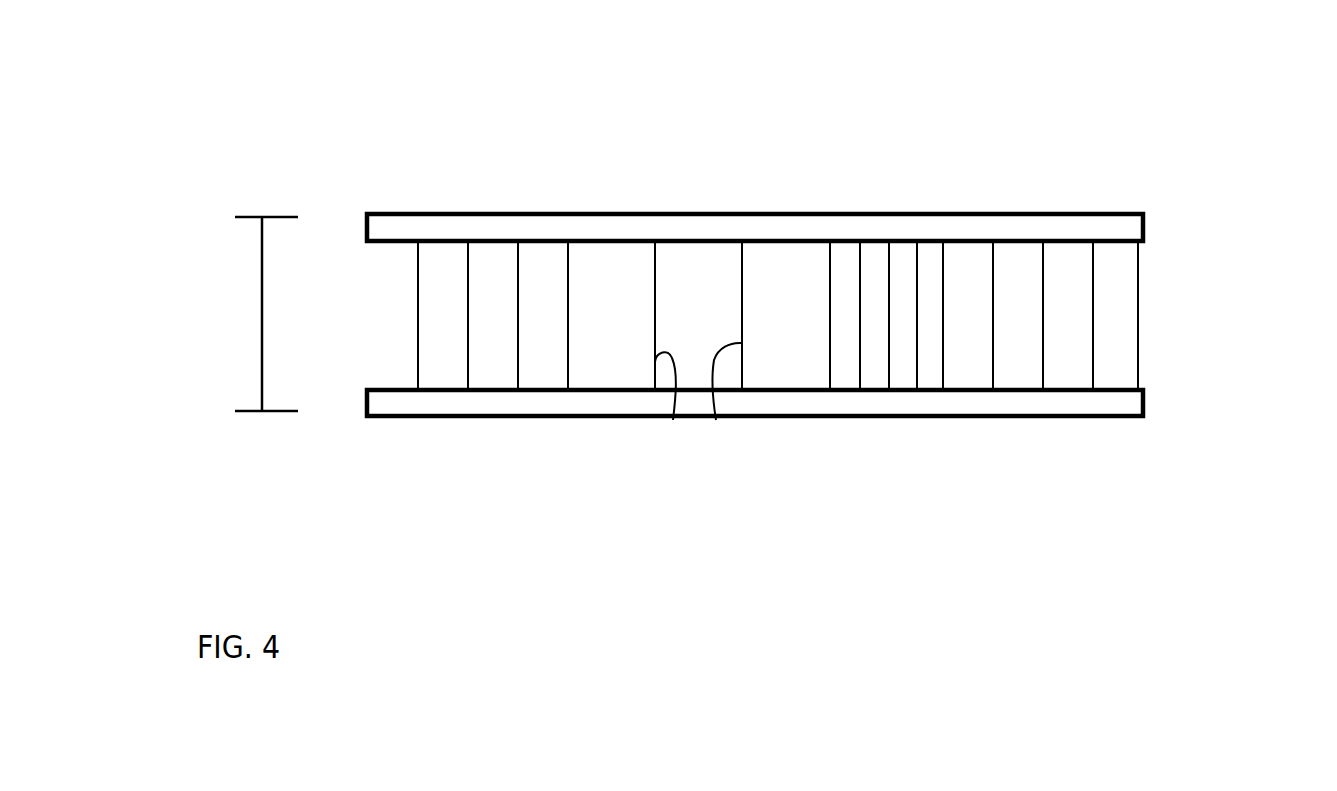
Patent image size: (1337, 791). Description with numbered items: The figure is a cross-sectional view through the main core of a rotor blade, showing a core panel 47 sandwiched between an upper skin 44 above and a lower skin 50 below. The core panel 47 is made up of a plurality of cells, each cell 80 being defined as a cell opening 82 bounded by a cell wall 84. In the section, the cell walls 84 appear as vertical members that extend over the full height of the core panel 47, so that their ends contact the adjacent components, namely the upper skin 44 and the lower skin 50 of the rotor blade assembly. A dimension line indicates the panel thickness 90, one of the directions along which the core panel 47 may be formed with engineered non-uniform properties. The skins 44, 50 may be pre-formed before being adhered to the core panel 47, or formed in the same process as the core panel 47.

The upper skin 44 is at (633, 222).
The lower skin 50 is at (842, 395).
The cell 80 is at (543, 315).
The cell opening 82 is at (688, 315).
The cell wall 84 is at (716, 420).
The panel thickness 90 is at (256, 314).
The core panel 47 is at (1172, 302).